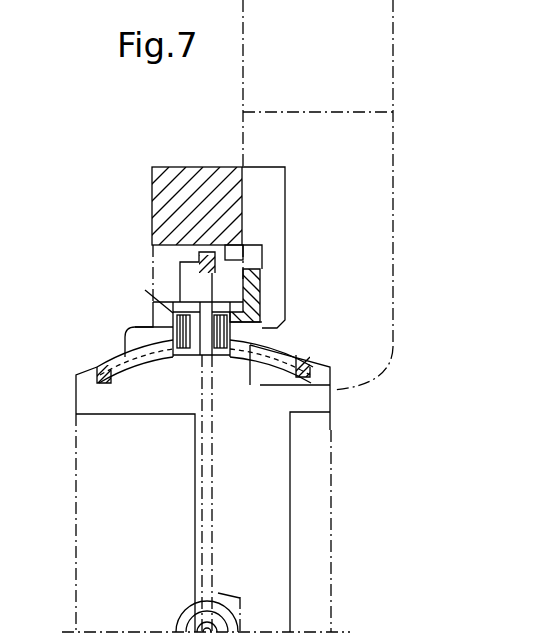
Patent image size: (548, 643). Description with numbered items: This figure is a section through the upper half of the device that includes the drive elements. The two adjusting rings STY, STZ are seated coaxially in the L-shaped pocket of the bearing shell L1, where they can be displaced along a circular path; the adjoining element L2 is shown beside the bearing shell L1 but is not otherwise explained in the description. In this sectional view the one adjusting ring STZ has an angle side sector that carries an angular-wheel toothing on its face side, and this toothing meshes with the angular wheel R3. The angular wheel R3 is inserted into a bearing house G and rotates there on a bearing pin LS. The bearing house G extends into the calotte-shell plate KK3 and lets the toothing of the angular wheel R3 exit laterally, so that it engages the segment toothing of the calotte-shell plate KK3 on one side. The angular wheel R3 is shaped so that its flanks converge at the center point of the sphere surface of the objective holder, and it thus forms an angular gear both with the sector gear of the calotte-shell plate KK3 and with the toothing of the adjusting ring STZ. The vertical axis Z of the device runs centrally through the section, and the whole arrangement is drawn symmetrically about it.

The bearing pin LS is at (187, 288).
The bearing house G is at (157, 303).
The angular wheel R3 is at (150, 328).
The calotte-shell plate KK3 is at (120, 367).
The bearing L2 is at (128, 364).
The adjusting ring STY is at (260, 290).
The adjusting ring STZ is at (265, 322).
The bearing shell L1 is at (262, 323).
The vertical axis Z is at (203, 508).